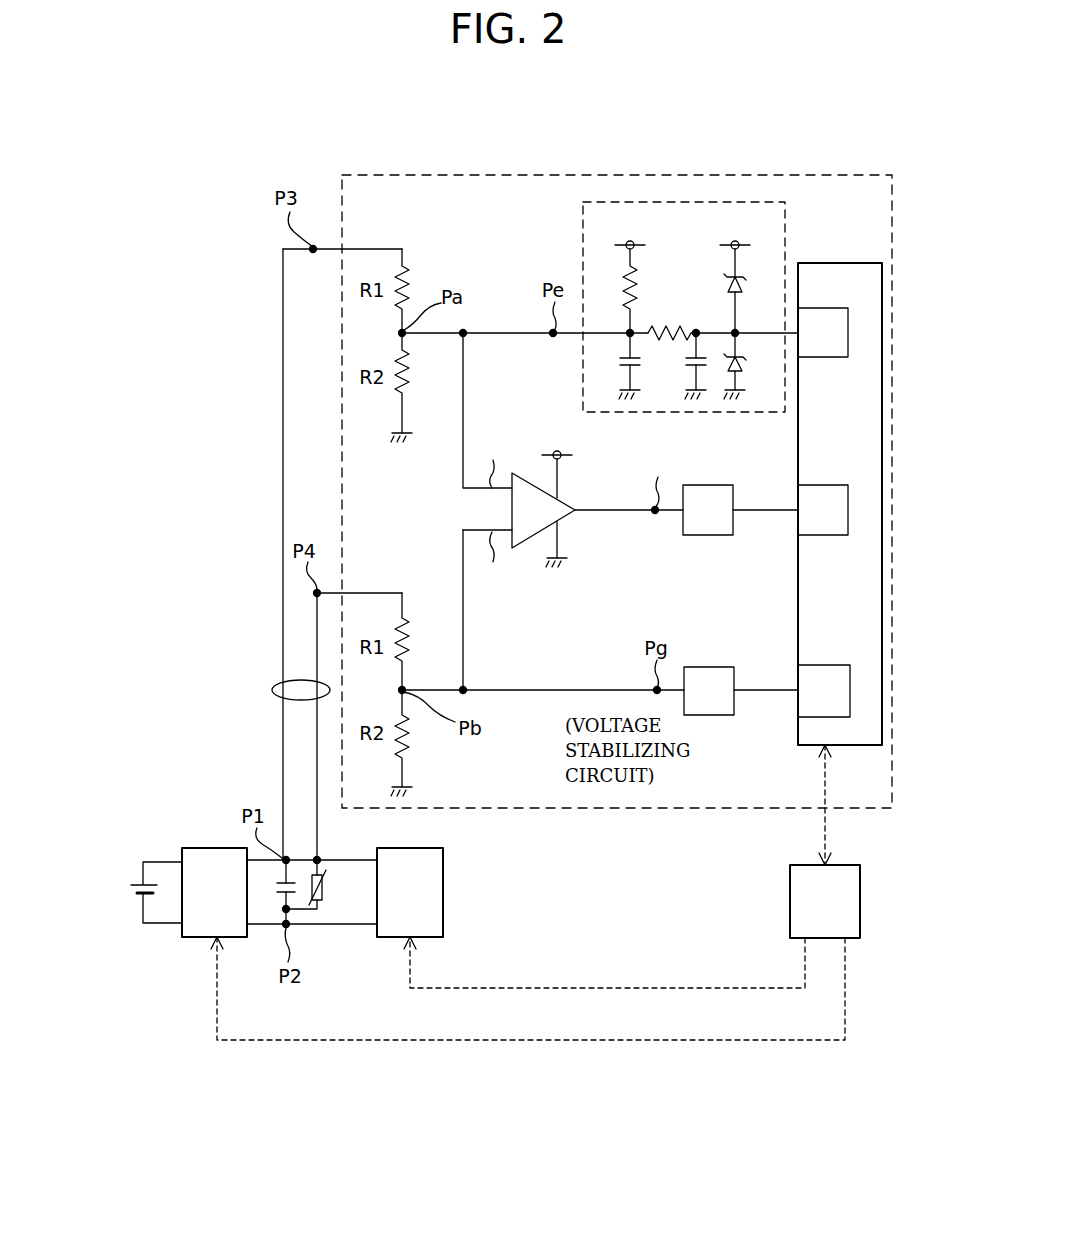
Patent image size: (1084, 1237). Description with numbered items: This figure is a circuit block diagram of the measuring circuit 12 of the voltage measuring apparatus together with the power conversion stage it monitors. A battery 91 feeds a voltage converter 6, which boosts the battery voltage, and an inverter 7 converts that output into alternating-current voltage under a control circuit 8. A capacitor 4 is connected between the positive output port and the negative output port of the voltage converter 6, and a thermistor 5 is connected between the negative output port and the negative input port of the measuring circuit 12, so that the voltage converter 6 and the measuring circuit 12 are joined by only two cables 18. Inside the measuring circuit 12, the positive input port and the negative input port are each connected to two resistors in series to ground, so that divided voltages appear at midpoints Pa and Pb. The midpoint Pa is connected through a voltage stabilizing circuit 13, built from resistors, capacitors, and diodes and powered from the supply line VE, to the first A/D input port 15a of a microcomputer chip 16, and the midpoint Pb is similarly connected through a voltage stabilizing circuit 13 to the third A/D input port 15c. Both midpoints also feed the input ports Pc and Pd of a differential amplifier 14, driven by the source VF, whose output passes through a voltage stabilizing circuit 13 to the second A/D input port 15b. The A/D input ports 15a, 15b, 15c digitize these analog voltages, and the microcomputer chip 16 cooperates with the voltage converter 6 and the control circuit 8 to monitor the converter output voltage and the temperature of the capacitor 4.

The measuring circuit 12 is at (390, 175).
The voltage stabilizing circuit 13 is at (583, 250).
The differential amplifier 14 is at (565, 520).
The first A/D input port 15a is at (832, 308).
The second A/D input port 15b is at (820, 535).
The third A/D input port 15c is at (825, 717).
The microcomputer chip 16 is at (798, 455).
The cables 18 is at (284, 554).
The battery 91 is at (139, 870).
The voltage converter 6 is at (206, 848).
The inverter 7 is at (443, 883).
The control circuit 8 is at (790, 903).
The capacitor 4 is at (282, 896).
The thermistor 5 is at (324, 883).